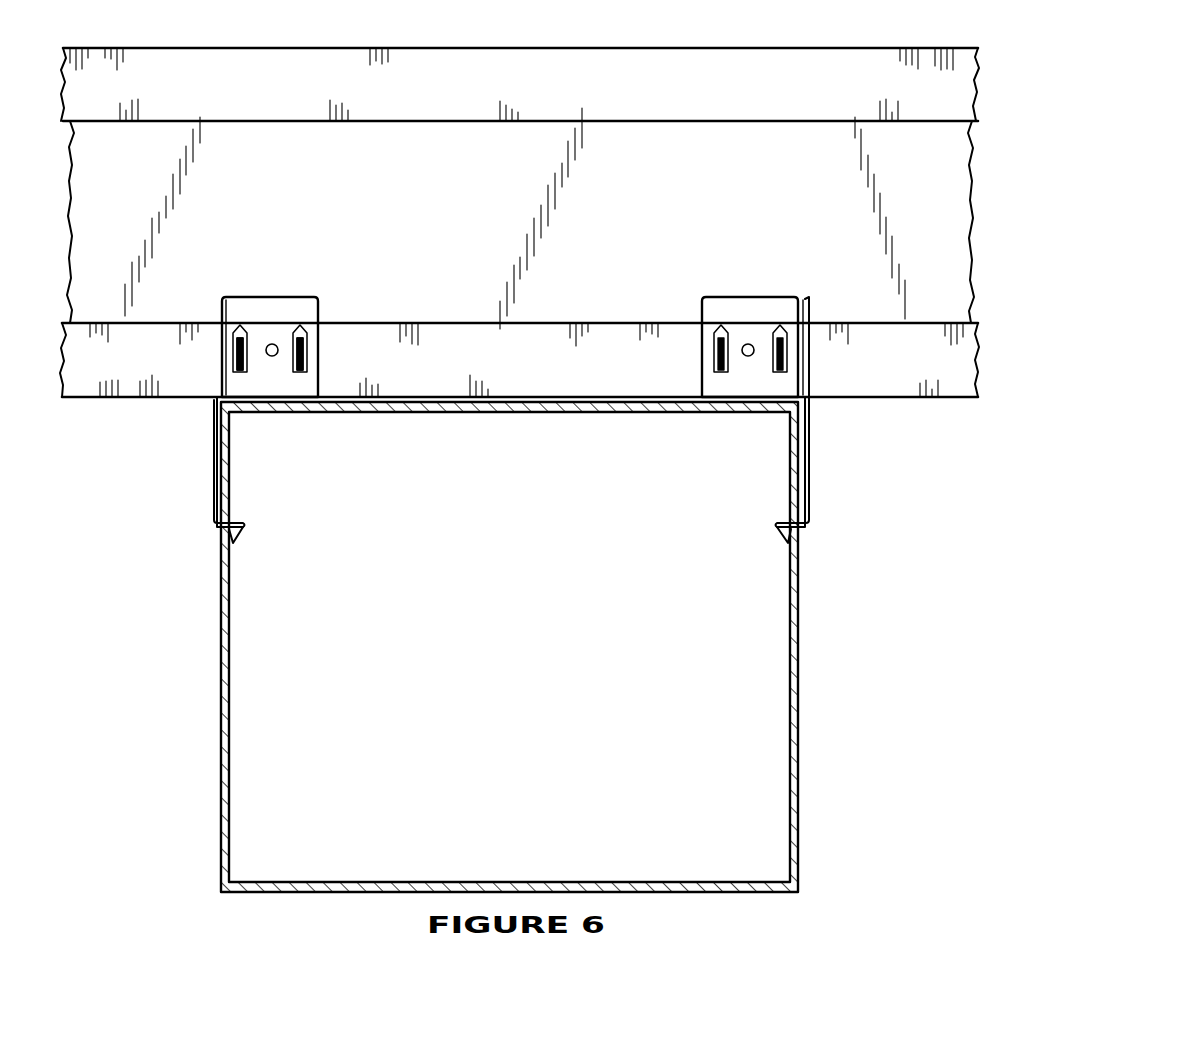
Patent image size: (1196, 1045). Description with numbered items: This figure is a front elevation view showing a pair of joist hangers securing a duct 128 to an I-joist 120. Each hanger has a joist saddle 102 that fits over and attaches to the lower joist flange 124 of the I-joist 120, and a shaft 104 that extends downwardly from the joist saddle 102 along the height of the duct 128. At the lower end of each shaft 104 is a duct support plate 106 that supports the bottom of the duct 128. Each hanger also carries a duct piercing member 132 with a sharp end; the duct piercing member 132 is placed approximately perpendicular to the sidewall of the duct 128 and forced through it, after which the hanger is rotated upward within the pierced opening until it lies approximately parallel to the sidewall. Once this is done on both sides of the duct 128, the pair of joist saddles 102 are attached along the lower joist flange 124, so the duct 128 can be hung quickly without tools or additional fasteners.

The I-joist beam 120 is at (607, 294).
The lower joist flange 124 is at (152, 397).
The joist saddle 102 is at (815, 347).
The shaft 104 is at (808, 462).
The duct support plate 106 is at (583, 480).
The duct piercing member 132 is at (787, 542).
The duct 128 is at (221, 808).